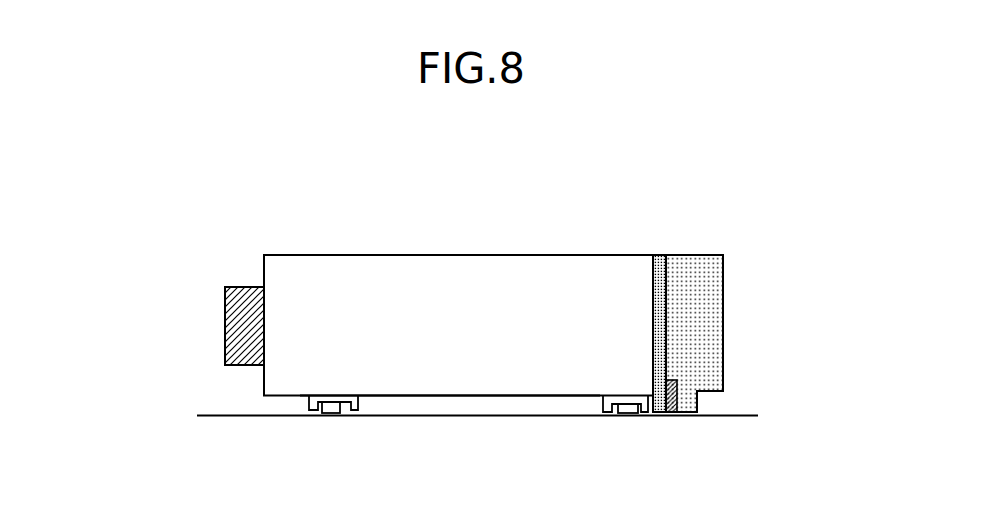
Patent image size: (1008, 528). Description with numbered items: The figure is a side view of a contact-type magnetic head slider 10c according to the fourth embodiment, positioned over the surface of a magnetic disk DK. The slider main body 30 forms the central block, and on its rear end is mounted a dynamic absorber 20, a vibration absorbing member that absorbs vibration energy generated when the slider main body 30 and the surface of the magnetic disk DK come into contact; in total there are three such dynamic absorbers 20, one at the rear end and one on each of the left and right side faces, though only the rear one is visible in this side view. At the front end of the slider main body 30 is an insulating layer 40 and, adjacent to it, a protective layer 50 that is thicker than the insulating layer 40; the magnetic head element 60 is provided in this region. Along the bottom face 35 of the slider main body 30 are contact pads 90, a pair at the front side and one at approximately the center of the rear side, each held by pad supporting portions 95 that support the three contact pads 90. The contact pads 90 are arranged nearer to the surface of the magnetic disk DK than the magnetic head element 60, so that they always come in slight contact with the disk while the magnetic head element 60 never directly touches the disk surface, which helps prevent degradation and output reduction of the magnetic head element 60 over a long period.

The magnetic head slider 10c is at (554, 156).
The dynamic absorber 20 is at (233, 287).
The slider main body 30 is at (412, 266).
The bottom face 35 is at (458, 399).
The insulating layer 40 is at (660, 258).
The protective layer 50 is at (712, 266).
The magnetic head element 60 is at (669, 412).
The contact pad 90 is at (331, 413).
The pad supporting portion 95 is at (356, 405).
The magnetic disk DK is at (207, 415).